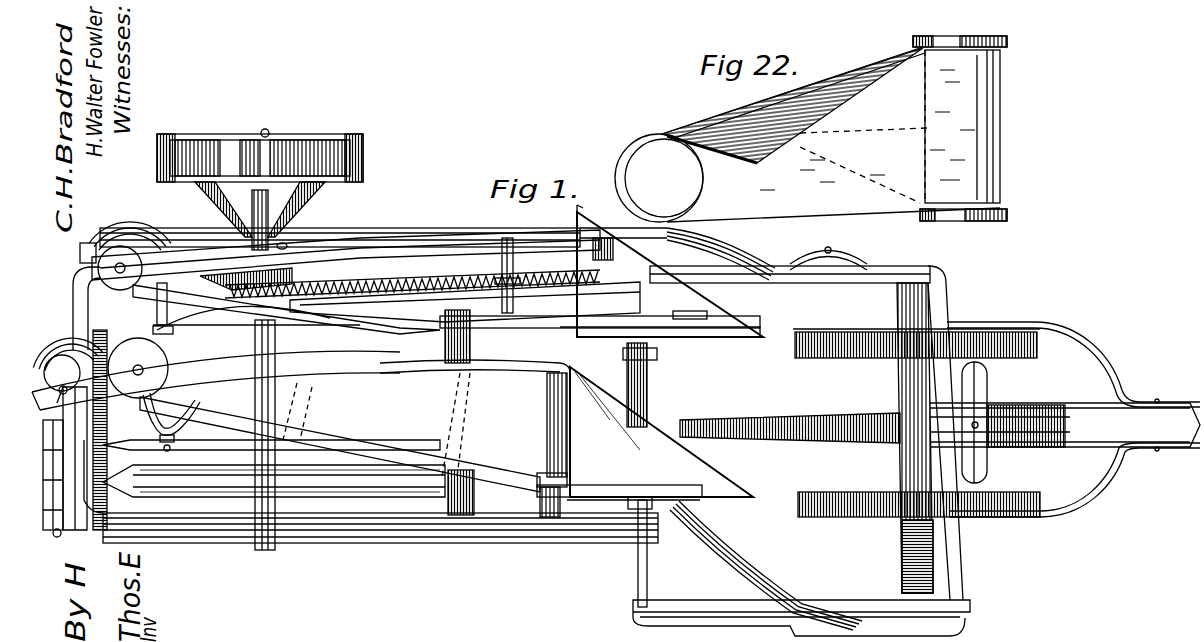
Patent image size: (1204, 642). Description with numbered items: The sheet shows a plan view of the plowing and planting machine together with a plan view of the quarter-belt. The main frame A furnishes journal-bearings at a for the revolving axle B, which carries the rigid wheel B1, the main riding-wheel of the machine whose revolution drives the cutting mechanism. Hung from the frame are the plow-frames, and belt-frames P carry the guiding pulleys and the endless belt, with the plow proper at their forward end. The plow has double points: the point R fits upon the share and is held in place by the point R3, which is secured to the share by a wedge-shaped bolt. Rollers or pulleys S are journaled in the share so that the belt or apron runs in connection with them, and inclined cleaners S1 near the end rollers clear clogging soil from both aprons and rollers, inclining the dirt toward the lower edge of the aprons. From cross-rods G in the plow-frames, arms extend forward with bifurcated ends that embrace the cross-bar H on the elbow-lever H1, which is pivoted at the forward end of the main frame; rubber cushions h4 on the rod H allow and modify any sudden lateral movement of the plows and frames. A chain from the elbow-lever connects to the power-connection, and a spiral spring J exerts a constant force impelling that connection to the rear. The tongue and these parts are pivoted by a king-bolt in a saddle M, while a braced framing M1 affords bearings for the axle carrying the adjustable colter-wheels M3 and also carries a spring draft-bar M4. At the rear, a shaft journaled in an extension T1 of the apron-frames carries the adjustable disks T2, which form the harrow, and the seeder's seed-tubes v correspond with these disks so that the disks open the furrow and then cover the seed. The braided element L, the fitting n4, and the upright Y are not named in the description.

The disks T2 is at (175, 230).
The extension of the apron-frames T1 is at (50, 370).
The main frame A is at (371, 392).
The braided cord L is at (412, 293).
The inclined cleaners S1 is at (570, 368).
The rollers or pulleys S is at (607, 497).
The belt-frames P is at (486, 377).
The plow point R is at (666, 351).
The plow point R3 is at (700, 320).
The cross-bar H is at (648, 384).
The elbow-lever H1 is at (960, 545).
The nut n4 is at (650, 356).
The rubber cushions h4 is at (652, 505).
The vertical post Y is at (45, 463).
The seed-tubes v is at (57, 403).
The cross-rods G is at (251, 367).
The revolving axle B is at (274, 468).
The rigid wheel B1 is at (290, 492).
The journal-bearings a is at (266, 441).
The braced framing M1 is at (925, 423).
The saddle M is at (919, 495).
The adjustable colter-wheels M3 is at (916, 351).
The spring draft-bar M4 is at (790, 439).
The spiral spring J is at (1037, 408).